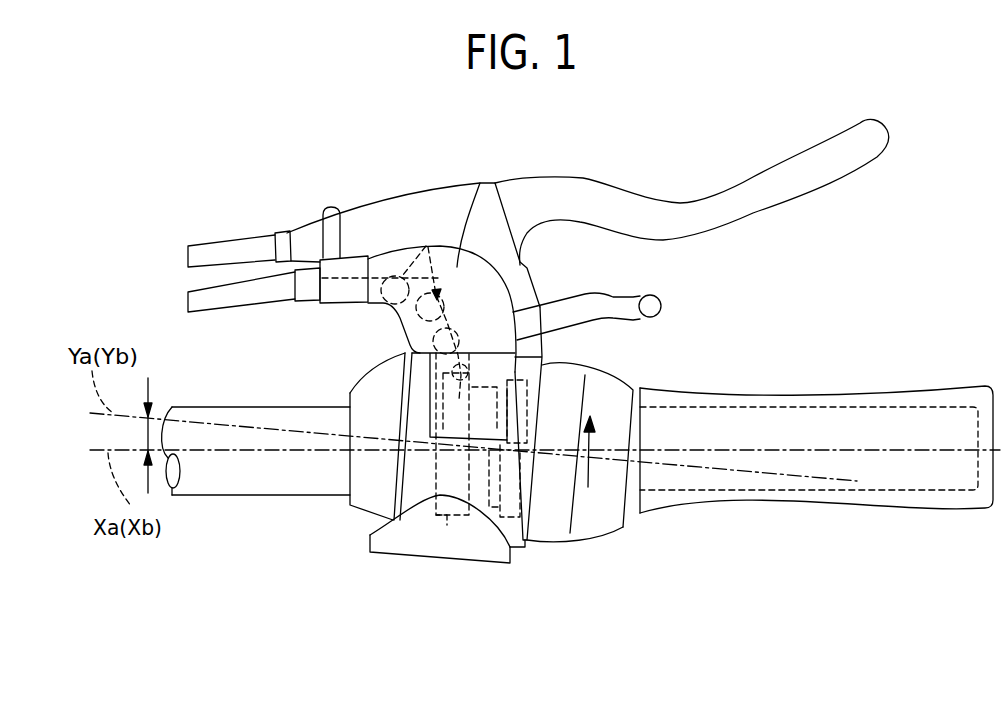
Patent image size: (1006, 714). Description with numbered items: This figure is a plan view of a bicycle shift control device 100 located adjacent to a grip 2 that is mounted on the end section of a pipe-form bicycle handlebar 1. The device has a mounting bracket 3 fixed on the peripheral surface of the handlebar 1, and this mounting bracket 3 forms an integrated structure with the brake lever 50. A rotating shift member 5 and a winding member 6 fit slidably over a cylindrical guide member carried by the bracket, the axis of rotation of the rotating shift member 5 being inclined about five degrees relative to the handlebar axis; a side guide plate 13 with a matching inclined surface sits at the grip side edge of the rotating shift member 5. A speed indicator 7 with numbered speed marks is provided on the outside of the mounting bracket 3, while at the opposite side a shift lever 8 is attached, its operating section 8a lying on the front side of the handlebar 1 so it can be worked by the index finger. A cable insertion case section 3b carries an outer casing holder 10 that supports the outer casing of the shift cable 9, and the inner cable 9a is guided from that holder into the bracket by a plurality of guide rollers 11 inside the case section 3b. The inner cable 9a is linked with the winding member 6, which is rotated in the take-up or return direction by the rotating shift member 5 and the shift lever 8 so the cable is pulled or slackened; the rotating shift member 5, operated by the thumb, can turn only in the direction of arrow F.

The bicycle handlebar 1 is at (260, 483).
The grip 2 is at (800, 393).
The mounting bracket 3 is at (363, 500).
The cable insertion case section 3b is at (481, 183).
The rotating shift member 5 is at (593, 527).
The winding member 6 is at (449, 520).
The speed indicator 7 is at (412, 559).
The shift lever 8 is at (572, 290).
The operating section 8a is at (668, 301).
The shift cable 9 is at (228, 293).
The inner cable 9a is at (352, 280).
The outer casing holder 10 is at (353, 258).
The guide rollers 11 is at (427, 237).
The side guide plate 13 is at (630, 517).
The brake lever 50 is at (708, 196).
The shift control device 100 is at (541, 570).
The arrow F is at (593, 440).